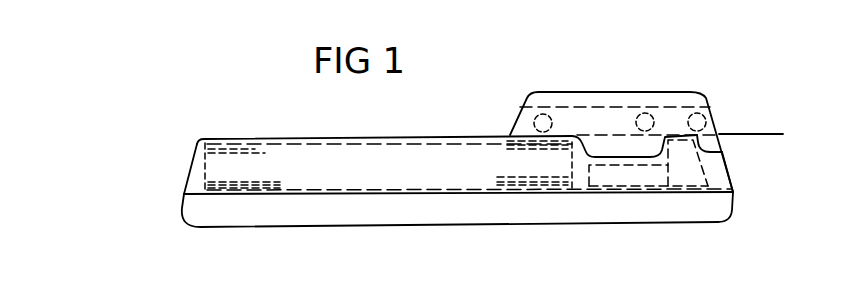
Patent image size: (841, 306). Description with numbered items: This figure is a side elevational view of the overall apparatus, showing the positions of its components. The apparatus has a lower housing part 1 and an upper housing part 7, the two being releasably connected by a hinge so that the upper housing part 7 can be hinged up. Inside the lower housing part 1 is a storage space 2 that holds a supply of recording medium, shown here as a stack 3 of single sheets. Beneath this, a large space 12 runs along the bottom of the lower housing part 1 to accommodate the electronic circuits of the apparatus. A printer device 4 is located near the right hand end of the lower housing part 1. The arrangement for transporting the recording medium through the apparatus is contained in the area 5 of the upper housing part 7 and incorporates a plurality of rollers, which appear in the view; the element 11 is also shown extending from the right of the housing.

The lower housing part 1 is at (242, 139).
The storage space 2 is at (194, 163).
The stack of single sheets 3 is at (263, 157).
The printer device 4 is at (622, 180).
The area 5 is at (520, 112).
The upper housing part 7 is at (531, 93).
The lead 11 is at (745, 134).
The large space 12 is at (222, 213).